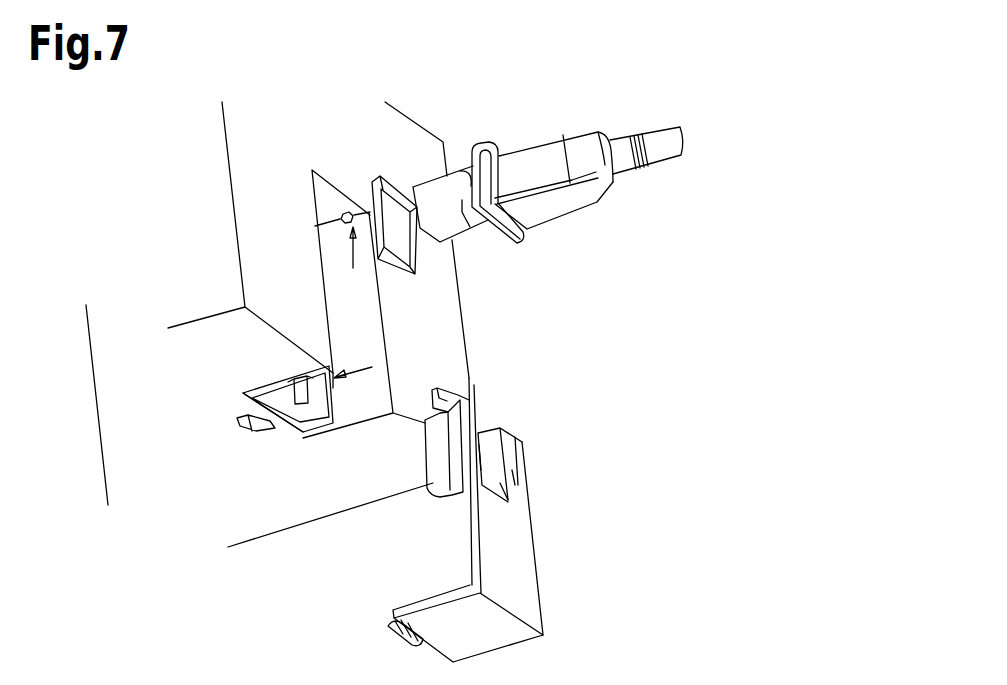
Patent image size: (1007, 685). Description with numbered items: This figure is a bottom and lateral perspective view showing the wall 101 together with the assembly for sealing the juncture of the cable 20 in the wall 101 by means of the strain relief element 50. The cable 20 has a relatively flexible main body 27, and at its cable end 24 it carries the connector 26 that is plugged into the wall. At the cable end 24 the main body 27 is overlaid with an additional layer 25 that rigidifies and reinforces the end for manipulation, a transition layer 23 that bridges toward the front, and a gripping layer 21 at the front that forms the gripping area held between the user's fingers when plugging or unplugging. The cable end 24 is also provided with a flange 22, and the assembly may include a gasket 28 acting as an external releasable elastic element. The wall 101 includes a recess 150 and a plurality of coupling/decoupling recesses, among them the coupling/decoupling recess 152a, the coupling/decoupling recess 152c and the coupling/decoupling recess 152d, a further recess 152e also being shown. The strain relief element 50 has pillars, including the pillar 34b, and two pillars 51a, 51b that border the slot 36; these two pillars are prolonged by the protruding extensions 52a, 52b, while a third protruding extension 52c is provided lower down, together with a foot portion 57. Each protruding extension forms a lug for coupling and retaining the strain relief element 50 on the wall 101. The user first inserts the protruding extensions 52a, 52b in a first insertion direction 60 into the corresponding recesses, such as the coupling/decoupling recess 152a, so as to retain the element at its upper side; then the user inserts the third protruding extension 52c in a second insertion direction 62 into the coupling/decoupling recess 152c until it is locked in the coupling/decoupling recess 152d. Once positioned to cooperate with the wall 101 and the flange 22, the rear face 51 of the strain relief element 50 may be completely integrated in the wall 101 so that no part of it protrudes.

The cable 20 is at (528, 189).
The gripping layer 21 is at (548, 167).
The flange 22 is at (494, 147).
The transition layer 23 is at (607, 187).
The cable end 24 is at (459, 172).
The additional layer 25 is at (635, 170).
The connector 26 is at (470, 227).
The main body 27 is at (665, 143).
The gasket 28 is at (393, 193).
The pillar 34b is at (443, 463).
The slot 36 is at (500, 485).
The strain relief element 50 is at (495, 508).
The rear face 51 is at (505, 582).
The pillar 51a is at (518, 477).
The pillar 51b is at (477, 458).
The protruding extension 52a is at (498, 428).
The protruding extension 52b is at (436, 388).
The protruding extension 52c is at (388, 636).
The base plate 57 is at (493, 632).
The first insertion direction 60 is at (353, 254).
The second insertion direction 62 is at (358, 367).
The wall 101 is at (432, 342).
The recess 150 is at (349, 289).
The coupling/decoupling recess 152a is at (343, 217).
The coupling/decoupling recess 152c is at (298, 403).
The coupling/decoupling recess 152d is at (237, 420).
The lower edge 152e is at (271, 428).